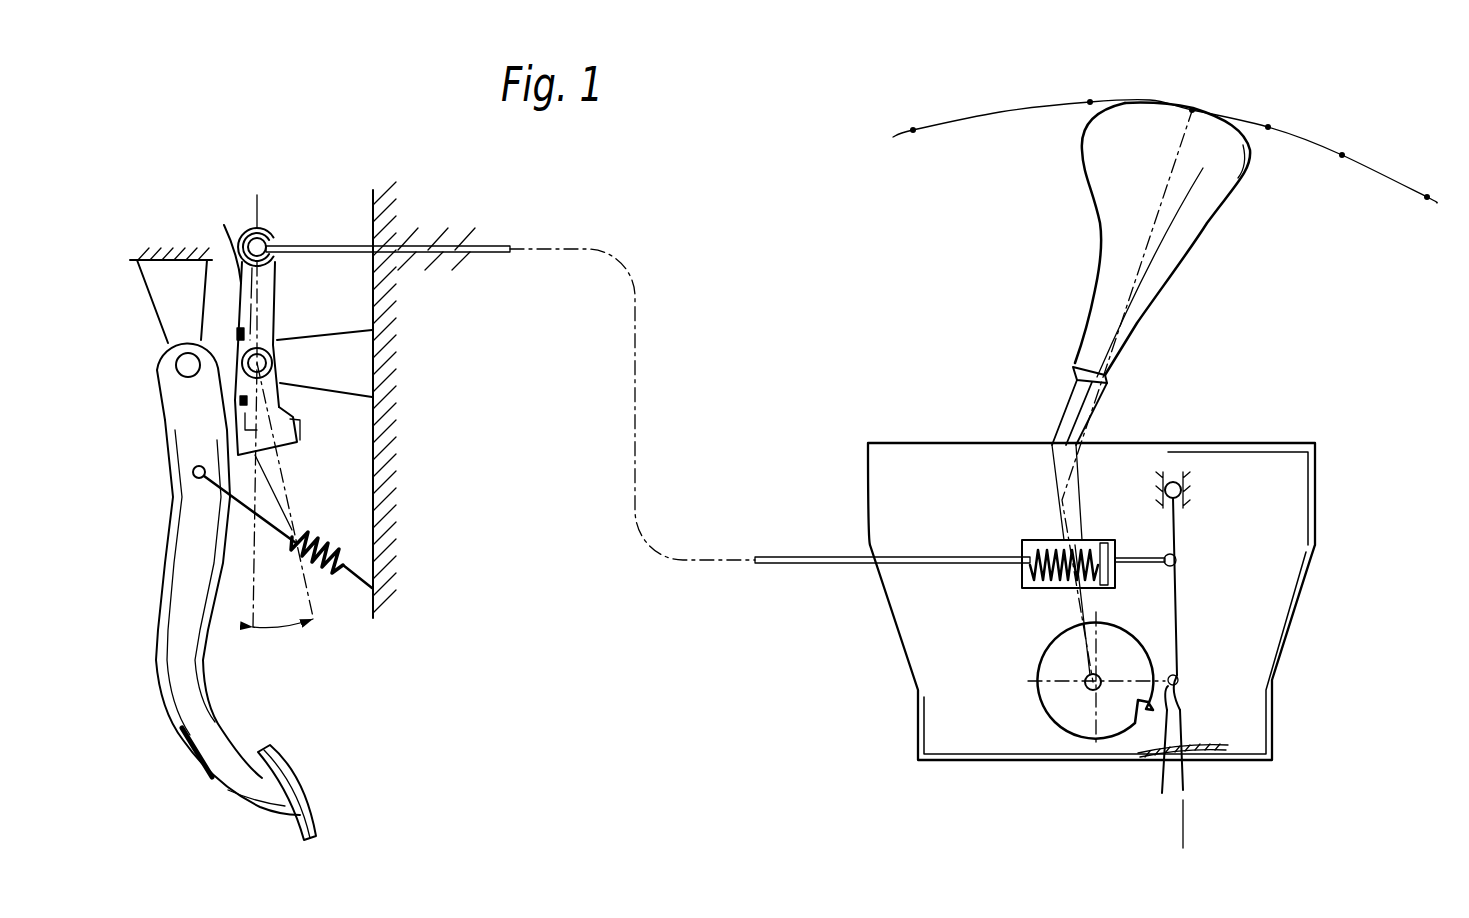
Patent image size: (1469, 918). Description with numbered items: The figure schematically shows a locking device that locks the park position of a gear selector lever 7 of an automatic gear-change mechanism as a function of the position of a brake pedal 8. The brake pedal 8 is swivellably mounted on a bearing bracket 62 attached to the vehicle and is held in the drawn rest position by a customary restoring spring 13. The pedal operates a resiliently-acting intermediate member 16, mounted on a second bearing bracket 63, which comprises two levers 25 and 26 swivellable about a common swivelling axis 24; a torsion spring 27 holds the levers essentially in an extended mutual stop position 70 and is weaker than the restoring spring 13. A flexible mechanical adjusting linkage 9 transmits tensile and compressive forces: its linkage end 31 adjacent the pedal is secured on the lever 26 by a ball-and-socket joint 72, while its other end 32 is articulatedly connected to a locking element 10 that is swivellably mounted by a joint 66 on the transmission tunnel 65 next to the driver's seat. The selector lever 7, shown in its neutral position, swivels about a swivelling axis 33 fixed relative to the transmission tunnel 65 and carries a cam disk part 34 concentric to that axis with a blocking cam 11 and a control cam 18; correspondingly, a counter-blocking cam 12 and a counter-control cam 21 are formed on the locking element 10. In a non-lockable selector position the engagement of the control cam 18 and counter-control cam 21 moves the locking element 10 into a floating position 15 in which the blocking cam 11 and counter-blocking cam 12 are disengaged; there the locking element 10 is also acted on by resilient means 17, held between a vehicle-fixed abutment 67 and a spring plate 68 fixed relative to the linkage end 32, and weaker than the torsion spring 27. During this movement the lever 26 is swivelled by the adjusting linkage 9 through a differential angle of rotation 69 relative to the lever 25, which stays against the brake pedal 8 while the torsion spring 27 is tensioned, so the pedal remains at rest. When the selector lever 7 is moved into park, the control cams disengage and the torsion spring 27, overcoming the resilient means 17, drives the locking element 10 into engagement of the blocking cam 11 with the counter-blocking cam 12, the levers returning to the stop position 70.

The gear selector lever 7 is at (1037, 292).
The brake pedal 8 is at (182, 746).
The flexible mechanical adjusting linkage 9 is at (640, 447).
The locking element 10 is at (1190, 597).
The blocking cam 11 is at (1136, 718).
The counter-blocking cam 12 is at (1180, 677).
The restoring spring 13 is at (332, 588).
The floating position 15 is at (1185, 820).
The resiliently-acting intermediate member 16 is at (280, 293).
The resilient means 17 is at (1078, 548).
The control cam 18 is at (1155, 658).
The counter-control cam 21 is at (1162, 765).
The common swivelling axis 24 is at (232, 386).
The lever 25 is at (297, 437).
The lever 26 is at (235, 268).
The torsion spring 27 is at (275, 343).
The linkage end 31 is at (338, 248).
The linkage end 32 is at (1175, 558).
The swivelling axis 33 is at (1087, 692).
The cam disk part 34 is at (1042, 712).
The bearing bracket 62 is at (170, 297).
The bearing bracket 63 is at (347, 366).
The transmission tunnel 65 is at (893, 440).
The joint 66 is at (1204, 480).
The abutment 67 is at (1032, 530).
The spring plate 68 is at (1090, 593).
The differential angle of rotation 69 is at (283, 630).
The extended mutual stop position 70 is at (298, 511).
The ball-and-socket joint 72 is at (259, 214).